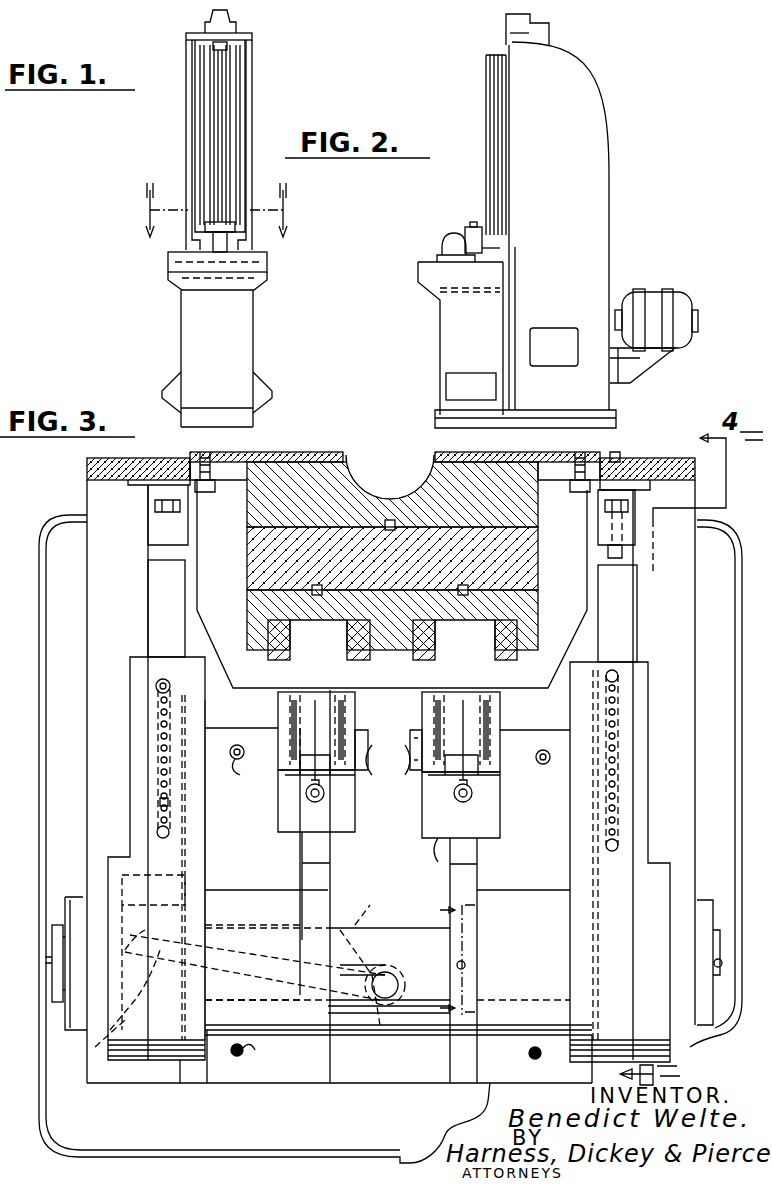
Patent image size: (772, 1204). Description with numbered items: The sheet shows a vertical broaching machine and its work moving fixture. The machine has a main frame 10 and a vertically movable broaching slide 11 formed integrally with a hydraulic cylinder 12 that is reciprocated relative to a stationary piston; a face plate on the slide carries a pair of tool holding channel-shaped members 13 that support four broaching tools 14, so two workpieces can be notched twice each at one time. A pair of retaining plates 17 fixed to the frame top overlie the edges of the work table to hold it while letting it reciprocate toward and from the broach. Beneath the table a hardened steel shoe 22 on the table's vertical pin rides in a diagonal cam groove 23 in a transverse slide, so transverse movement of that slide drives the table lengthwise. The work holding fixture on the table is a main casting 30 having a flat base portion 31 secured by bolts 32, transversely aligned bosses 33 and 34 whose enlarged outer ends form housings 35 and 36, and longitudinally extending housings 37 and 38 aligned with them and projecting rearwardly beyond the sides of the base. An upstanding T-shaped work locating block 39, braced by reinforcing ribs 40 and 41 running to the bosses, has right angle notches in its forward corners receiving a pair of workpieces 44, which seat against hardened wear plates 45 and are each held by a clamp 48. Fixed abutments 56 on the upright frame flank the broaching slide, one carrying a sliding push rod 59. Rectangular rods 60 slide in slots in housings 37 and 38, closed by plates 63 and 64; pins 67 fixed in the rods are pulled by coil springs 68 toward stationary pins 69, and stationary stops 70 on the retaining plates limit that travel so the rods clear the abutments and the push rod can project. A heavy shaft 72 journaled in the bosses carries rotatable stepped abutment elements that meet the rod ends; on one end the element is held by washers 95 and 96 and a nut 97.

In FIG. 1, the main frame 10 is at (193, 327).
In FIG. 2, the main frame 10 is at (590, 250).
In FIG. 3, the broaching slide 11 is at (520, 518).
In FIG. 3, the hydraulic cylinder 12 is at (518, 548).
In FIG. 3, the tool holding channel-shaped members 13 is at (247, 600).
In FIG. 3, the broaching tools 14 is at (315, 645).
In FIG. 3, the retaining plates 17 is at (672, 830).
In FIG. 3, the rectangular shoe 22 is at (380, 1008).
In FIG. 3, the cam groove 23 is at (360, 962).
In FIG. 3, the main casting 30 is at (332, 846).
In FIG. 3, the base portion 31 is at (453, 1083).
In FIG. 3, the bolts 32 is at (528, 1053).
In FIG. 3, the boss 33 is at (226, 895).
In FIG. 3, the boss 34 is at (548, 896).
In FIG. 3, the housing 35 is at (162, 1062).
In FIG. 3, the housing 36 is at (575, 1065).
In FIG. 3, the longitudinally extending housing 37 is at (195, 714).
In FIG. 3, the longitudinally extending housing 38 is at (572, 705).
In FIG. 3, the work locating block 39 is at (392, 838).
In FIG. 3, the reinforcing rib 40 is at (300, 872).
In FIG. 3, the reinforcing rib 41 is at (470, 878).
In FIG. 3, the workpieces 44 is at (420, 712).
In FIG. 3, the wear plates 45 is at (348, 790).
In FIG. 3, the clamp 48 is at (325, 808).
In FIG. 3, the fixed abutments 56 is at (148, 528).
In FIG. 3, the push rod 59 is at (608, 553).
In FIG. 3, the rods 60 is at (150, 590).
In FIG. 3, the plate 63 is at (160, 802).
In FIG. 3, the plate 64 is at (630, 724).
In FIG. 3, the pins 67 is at (156, 686).
In FIG. 3, the coil springs 68 is at (158, 770).
In FIG. 3, the stationary pins 69 is at (157, 832).
In FIG. 3, the stationary stops 70 is at (158, 700).
In FIG. 3, the shaft 72 is at (370, 925).
In FIG. 3, the washer 95 is at (123, 980).
In FIG. 3, the washer 96 is at (92, 1042).
In FIG. 3, the nut 97 is at (135, 912).